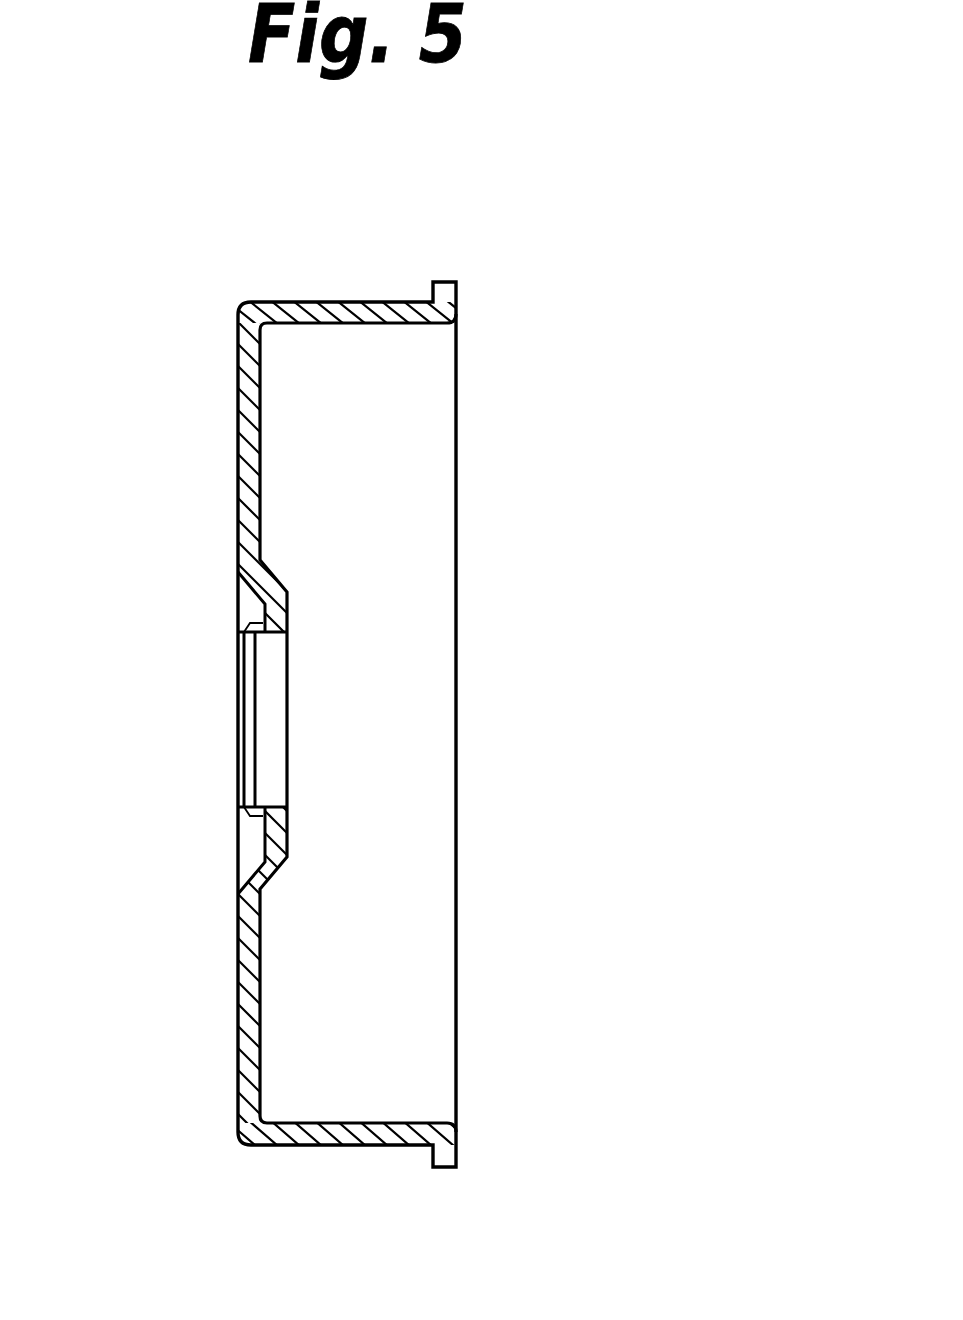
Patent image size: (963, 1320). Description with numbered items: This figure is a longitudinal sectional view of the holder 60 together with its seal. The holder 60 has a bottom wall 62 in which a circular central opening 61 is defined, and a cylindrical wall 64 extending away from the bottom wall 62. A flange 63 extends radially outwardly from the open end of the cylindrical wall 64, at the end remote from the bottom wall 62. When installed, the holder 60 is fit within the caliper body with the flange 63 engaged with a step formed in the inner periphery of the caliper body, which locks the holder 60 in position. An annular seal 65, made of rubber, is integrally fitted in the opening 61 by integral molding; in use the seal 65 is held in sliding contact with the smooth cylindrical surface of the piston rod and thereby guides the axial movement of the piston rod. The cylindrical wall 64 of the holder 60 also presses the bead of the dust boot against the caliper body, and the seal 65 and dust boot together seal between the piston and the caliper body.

The holder 60 is at (461, 467).
The circular central opening 61 is at (288, 785).
The bottom wall 62 is at (238, 998).
The flange 63 is at (459, 1143).
The cylindrical wall 64 is at (300, 302).
The annular seal 65 is at (237, 720).